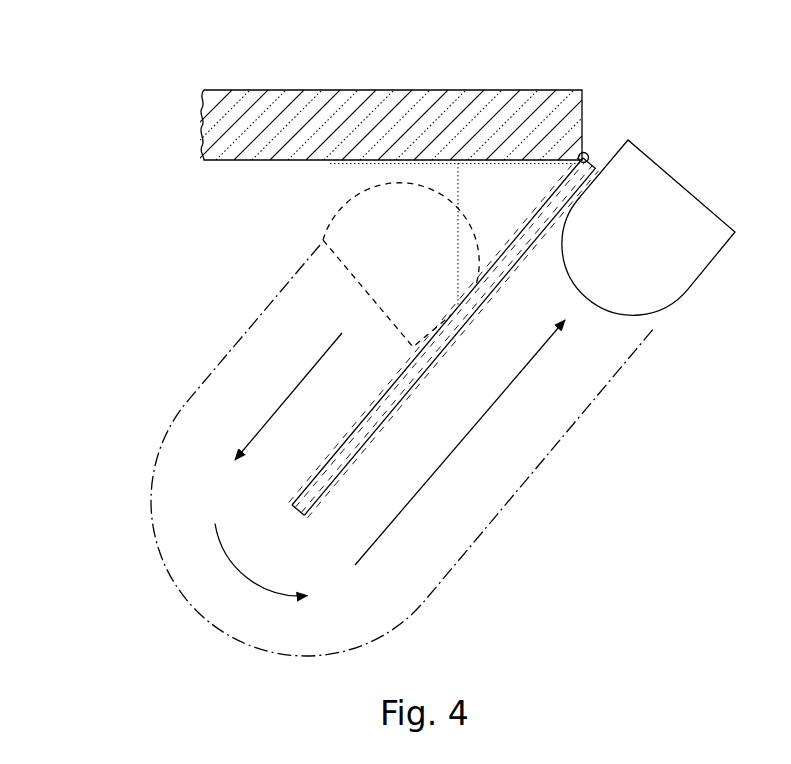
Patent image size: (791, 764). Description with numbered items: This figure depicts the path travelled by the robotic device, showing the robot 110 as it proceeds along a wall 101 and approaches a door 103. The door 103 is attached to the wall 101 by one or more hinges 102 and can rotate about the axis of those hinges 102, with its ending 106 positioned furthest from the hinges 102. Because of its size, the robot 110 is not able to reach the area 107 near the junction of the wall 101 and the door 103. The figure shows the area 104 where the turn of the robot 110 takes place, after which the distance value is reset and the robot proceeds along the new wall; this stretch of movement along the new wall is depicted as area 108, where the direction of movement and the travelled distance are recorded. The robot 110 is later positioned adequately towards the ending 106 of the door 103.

The wall 101 is at (248, 123).
The hinges 102 is at (588, 152).
The door 103 is at (513, 257).
The turn area 104 is at (253, 580).
The door ending 106 is at (283, 507).
The unreachable area 107 is at (493, 198).
The new wall movement area 108 is at (510, 382).
The robot 110 is at (622, 198).